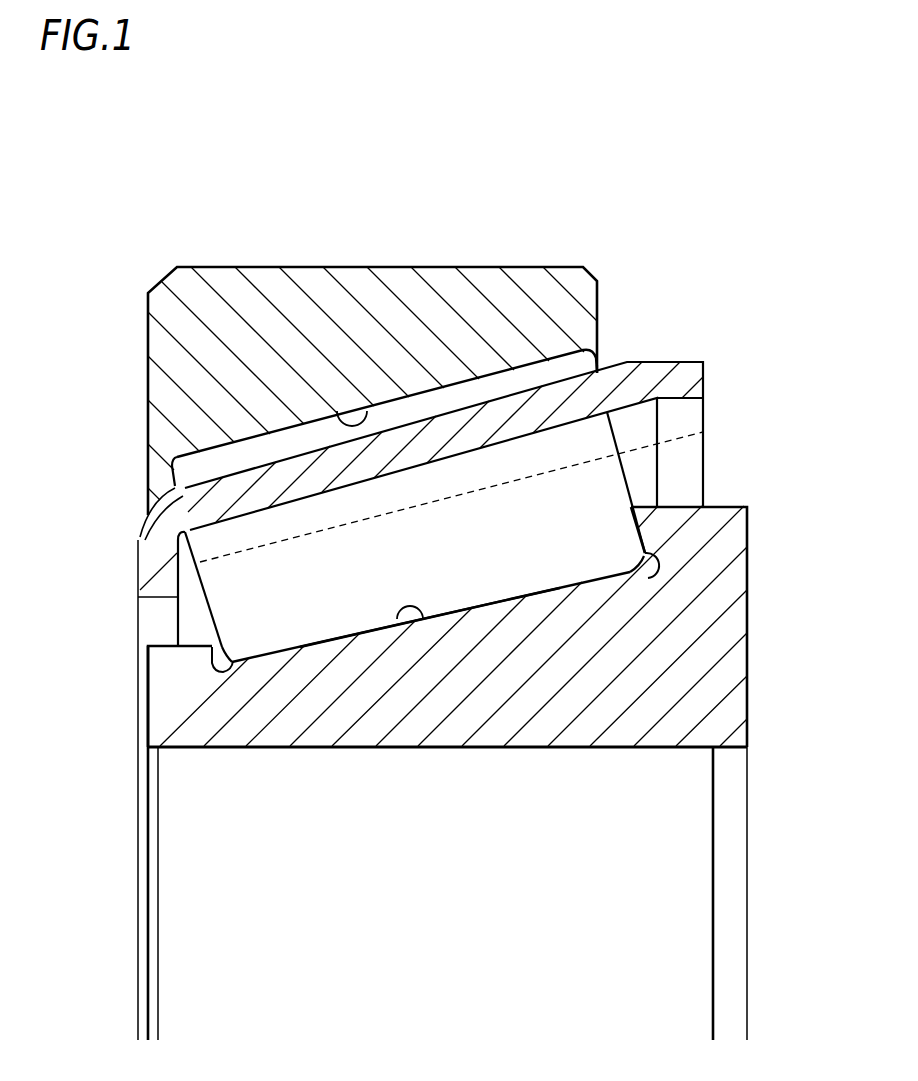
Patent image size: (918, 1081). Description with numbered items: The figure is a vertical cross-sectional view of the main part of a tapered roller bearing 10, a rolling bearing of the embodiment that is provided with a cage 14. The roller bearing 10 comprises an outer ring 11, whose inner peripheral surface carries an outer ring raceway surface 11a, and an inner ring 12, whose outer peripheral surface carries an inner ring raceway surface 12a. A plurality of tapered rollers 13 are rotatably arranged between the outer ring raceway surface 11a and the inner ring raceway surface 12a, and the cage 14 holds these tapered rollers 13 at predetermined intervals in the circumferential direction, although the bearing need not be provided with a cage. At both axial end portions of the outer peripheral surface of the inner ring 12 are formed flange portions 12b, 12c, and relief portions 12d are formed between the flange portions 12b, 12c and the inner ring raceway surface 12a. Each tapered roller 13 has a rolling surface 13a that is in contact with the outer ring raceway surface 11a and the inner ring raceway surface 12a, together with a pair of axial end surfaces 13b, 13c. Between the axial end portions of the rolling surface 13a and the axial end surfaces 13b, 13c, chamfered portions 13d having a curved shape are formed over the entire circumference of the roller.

The tapered roller bearing 10 is at (490, 190).
The outer ring 11 is at (148, 354).
The outer ring raceway surface 11a is at (333, 398).
The inner ring 12 is at (749, 615).
The inner ring raceway surface 12a is at (420, 622).
The flange portion 12b is at (163, 668).
The flange portion 12c is at (668, 523).
The relief portion 12d is at (225, 675).
The tapered roller 13 is at (270, 593).
The rolling surface 13a is at (500, 602).
The axial end surface 13b is at (205, 618).
The axial end surface 13c is at (640, 480).
The chamfered portion 13d is at (232, 668).
The cage 14 is at (627, 383).